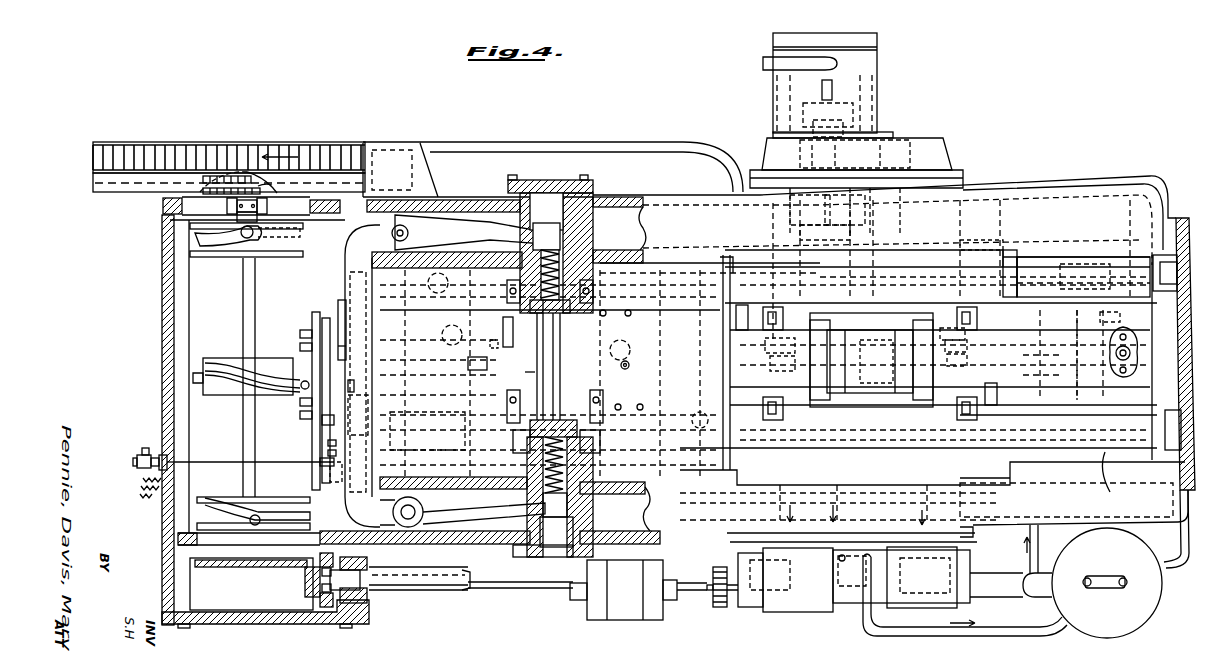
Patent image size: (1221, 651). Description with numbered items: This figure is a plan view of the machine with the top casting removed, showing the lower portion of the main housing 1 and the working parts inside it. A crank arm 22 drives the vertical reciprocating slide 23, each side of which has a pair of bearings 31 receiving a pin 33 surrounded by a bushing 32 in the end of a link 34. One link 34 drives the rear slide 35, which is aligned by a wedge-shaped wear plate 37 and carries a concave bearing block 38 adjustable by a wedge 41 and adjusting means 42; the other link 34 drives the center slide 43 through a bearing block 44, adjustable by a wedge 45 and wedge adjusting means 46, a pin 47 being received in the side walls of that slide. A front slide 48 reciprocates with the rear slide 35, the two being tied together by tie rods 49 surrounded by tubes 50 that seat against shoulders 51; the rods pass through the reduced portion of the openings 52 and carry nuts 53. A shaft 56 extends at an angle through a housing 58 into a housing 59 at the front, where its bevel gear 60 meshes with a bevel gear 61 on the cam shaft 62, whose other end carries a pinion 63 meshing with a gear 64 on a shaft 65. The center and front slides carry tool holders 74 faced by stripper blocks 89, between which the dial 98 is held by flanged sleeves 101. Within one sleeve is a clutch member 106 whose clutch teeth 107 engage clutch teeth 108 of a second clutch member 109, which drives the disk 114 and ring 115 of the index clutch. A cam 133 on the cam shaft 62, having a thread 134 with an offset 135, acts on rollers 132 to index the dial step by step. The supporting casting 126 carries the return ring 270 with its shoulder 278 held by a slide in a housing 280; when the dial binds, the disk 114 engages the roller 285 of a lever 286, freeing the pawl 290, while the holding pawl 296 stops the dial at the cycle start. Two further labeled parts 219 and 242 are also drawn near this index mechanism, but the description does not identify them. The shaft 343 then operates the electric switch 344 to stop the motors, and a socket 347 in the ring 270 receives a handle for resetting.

The lower portion of the main housing 1 is at (1032, 187).
The crank arm 22 is at (907, 368).
The vertical reciprocating slide 23 is at (965, 334).
The bearings 31 is at (766, 406).
The bushing 32 is at (770, 360).
The pin 33 is at (765, 345).
The link 34 is at (738, 330).
The rear slide 35 is at (1120, 476).
The wedge-shaped wear plate 37 is at (1085, 470).
The bearing block 38 is at (1093, 348).
The adjusting wedge 41 is at (1119, 309).
The adjusting means 42 is at (1127, 343).
The center slide 43 is at (706, 258).
The bearing block 44 is at (628, 329).
The wedge 45 is at (643, 409).
The wedge adjusting means 46 is at (629, 365).
The pin 47 is at (704, 410).
The front slide 48 is at (437, 478).
The tie rods 49 is at (988, 250).
The tubes 50 is at (1007, 265).
The shoulders 51 is at (440, 297).
The reduced portion of the openings 52 is at (410, 312).
The nuts 53 is at (1170, 410).
The shaft 56 is at (407, 590).
The housing 58 is at (436, 592).
The housing 59 is at (266, 625).
The bevel gear 60 is at (313, 597).
The bevel gear 61 is at (230, 572).
The cam shaft 62 is at (243, 432).
The pinion 63 is at (264, 186).
The gear 64 is at (163, 208).
The shaft 65 is at (237, 172).
The tool holders 74 is at (521, 398).
The stripper block 89 is at (555, 421).
The dial 98 is at (548, 348).
The sleeves 101 is at (472, 347).
The clutch member 106 is at (518, 339).
The clutch teeth 107 is at (521, 373).
The clutch teeth 108 is at (463, 360).
The clutch member 109 is at (427, 428).
The disk 114 is at (346, 328).
The ring 115 is at (313, 325).
The supporting casting 126 is at (340, 259).
The rollers 132 is at (301, 340).
The drive wheel or cam 133 is at (236, 360).
The thread 134 is at (262, 388).
The offset 135 is at (208, 358).
The spring 219 is at (332, 472).
The catch 242 is at (322, 463).
The ring 270 is at (317, 312).
The shoulder 278 is at (328, 443).
The housing 280 is at (328, 453).
The roller 285 is at (362, 390).
The lever 286 is at (372, 412).
The pawl 290 is at (322, 420).
The holding pawl 296 is at (346, 346).
The shaft 343 is at (212, 462).
The electric switch 344 is at (142, 463).
The socket 347 is at (304, 390).